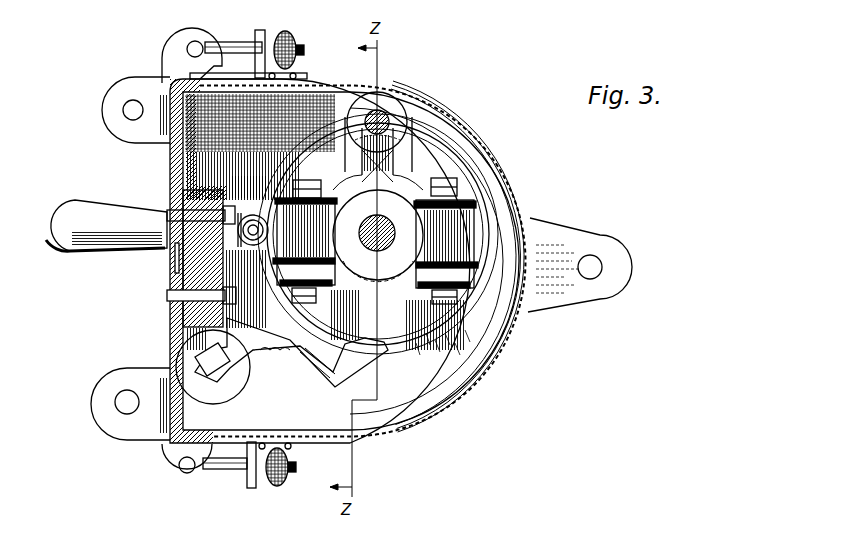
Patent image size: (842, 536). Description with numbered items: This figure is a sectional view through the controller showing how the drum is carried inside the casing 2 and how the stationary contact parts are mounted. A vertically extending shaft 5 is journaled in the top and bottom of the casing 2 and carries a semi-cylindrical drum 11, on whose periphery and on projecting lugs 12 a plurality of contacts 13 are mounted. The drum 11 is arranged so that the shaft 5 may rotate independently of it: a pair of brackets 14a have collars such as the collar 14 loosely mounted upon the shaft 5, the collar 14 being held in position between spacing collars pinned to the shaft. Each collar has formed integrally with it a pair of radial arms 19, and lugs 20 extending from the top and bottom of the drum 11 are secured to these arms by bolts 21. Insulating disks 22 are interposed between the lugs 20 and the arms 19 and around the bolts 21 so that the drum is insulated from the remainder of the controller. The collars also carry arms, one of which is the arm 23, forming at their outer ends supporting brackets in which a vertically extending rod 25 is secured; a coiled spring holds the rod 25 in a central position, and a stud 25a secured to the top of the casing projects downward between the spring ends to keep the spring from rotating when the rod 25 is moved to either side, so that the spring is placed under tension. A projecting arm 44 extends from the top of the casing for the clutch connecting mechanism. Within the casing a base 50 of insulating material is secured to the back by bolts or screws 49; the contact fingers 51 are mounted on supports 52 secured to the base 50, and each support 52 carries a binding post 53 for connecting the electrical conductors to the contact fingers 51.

The casing 2 is at (167, 440).
The shaft 5 is at (383, 246).
The semi-cylindrical drum 11 is at (492, 374).
The projecting lugs 12 is at (486, 396).
The contacts 13 is at (464, 328).
The collar 14 is at (412, 176).
The brackets 14a is at (462, 192).
The radial arms 19 is at (455, 233).
The lugs 20 is at (470, 280).
The bolts 21 is at (300, 178).
The insulating disks 22 is at (482, 293).
The arm 23 is at (363, 110).
The rod 25 is at (386, 107).
The stud 25a is at (403, 133).
The projecting arm 44 is at (115, 214).
The bolts or screws 49 is at (183, 318).
The base 50 is at (177, 258).
The contact fingers 51 is at (352, 374).
The supports 52 is at (210, 358).
The binding post 53 is at (228, 372).